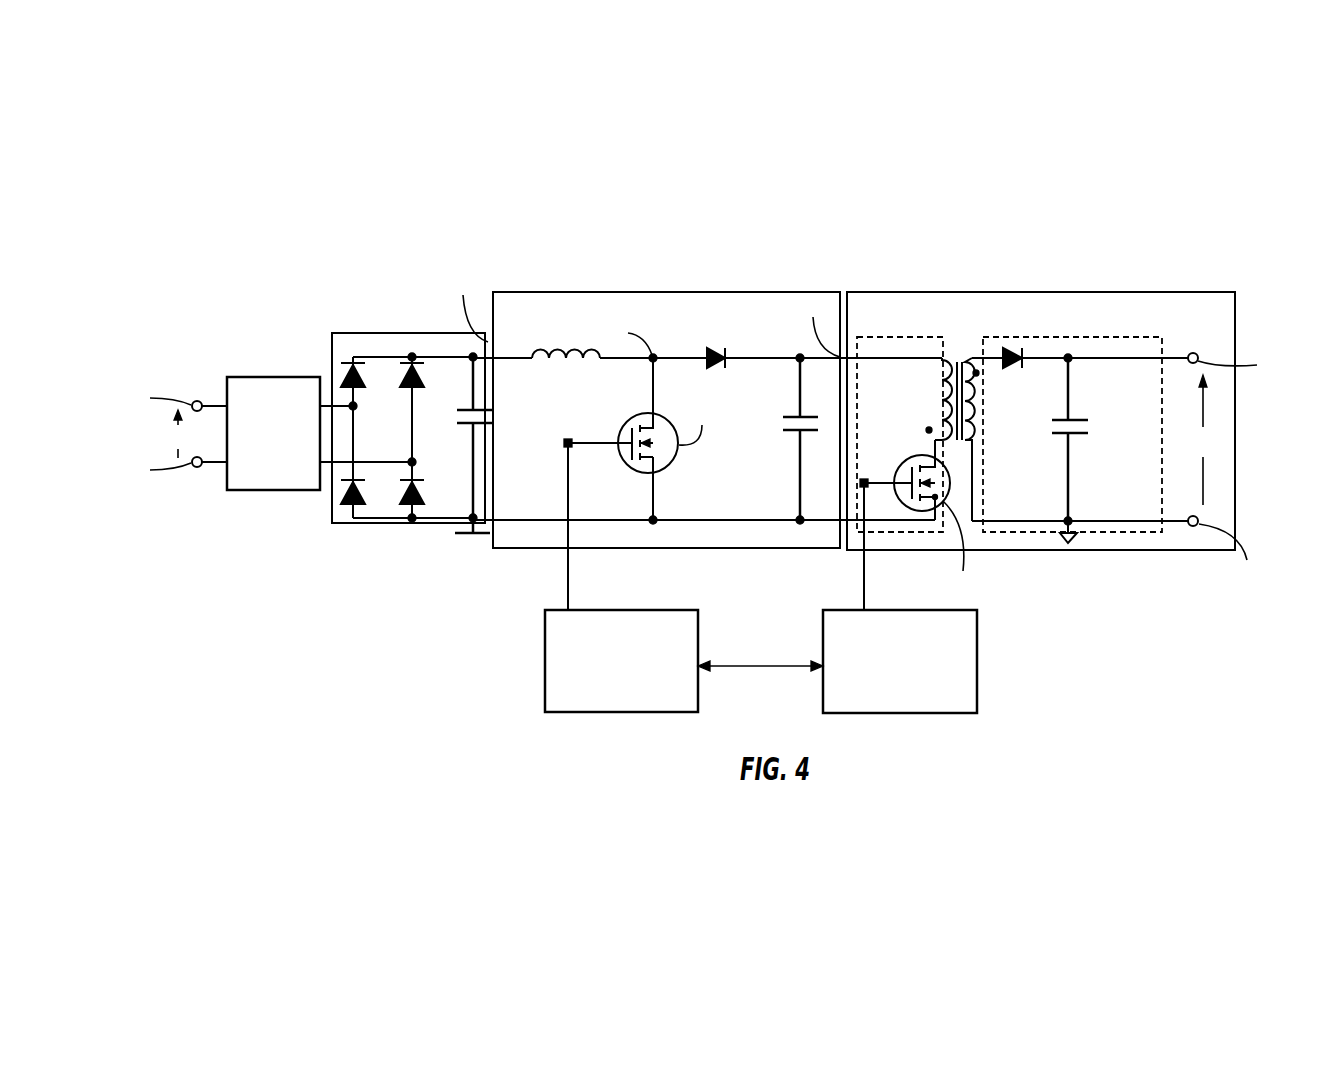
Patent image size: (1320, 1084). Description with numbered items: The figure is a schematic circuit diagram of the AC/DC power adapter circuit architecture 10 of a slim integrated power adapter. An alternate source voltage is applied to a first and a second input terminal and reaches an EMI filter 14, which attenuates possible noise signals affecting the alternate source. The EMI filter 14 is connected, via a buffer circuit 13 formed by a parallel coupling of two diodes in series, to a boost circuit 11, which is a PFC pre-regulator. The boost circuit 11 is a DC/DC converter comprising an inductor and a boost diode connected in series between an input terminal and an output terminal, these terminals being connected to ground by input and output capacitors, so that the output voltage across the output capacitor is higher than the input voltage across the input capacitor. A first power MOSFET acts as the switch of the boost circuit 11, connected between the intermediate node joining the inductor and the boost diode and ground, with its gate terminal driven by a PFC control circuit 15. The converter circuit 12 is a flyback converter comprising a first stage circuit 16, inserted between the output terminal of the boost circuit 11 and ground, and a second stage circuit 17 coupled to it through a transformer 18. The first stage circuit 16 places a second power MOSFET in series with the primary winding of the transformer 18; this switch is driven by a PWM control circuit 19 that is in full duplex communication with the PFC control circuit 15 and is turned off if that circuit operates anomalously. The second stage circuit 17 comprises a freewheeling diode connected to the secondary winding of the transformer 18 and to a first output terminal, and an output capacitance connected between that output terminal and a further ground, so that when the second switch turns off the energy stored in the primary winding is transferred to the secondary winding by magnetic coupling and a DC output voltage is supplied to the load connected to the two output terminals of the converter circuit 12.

The power adapter circuit architecture 10 is at (578, 253).
The boost circuit 11 is at (732, 308).
The converter circuit 12 is at (1082, 302).
The buffer circuit 13 is at (338, 352).
The EMI filter 14 is at (262, 388).
The PFC control circuit 15 is at (603, 713).
The first stage circuit 16 is at (905, 343).
The second stage circuit 17 is at (1142, 345).
The transformer 18 is at (958, 362).
The PWM control circuit 19 is at (887, 713).